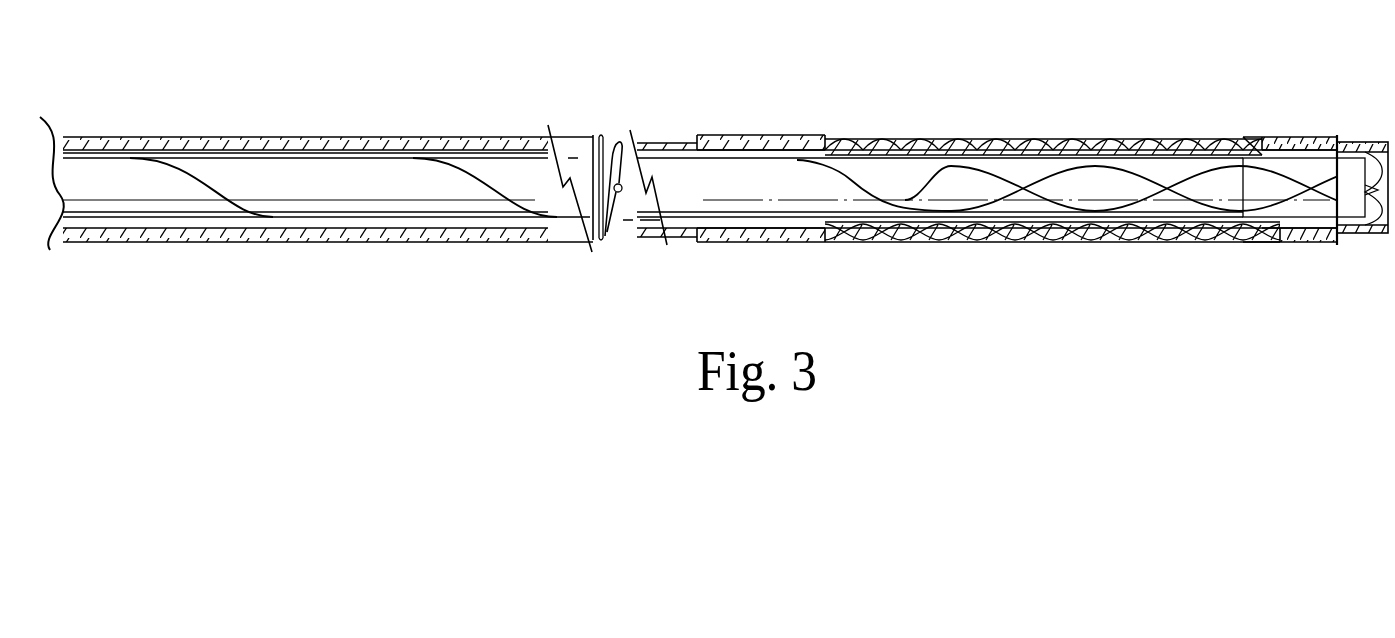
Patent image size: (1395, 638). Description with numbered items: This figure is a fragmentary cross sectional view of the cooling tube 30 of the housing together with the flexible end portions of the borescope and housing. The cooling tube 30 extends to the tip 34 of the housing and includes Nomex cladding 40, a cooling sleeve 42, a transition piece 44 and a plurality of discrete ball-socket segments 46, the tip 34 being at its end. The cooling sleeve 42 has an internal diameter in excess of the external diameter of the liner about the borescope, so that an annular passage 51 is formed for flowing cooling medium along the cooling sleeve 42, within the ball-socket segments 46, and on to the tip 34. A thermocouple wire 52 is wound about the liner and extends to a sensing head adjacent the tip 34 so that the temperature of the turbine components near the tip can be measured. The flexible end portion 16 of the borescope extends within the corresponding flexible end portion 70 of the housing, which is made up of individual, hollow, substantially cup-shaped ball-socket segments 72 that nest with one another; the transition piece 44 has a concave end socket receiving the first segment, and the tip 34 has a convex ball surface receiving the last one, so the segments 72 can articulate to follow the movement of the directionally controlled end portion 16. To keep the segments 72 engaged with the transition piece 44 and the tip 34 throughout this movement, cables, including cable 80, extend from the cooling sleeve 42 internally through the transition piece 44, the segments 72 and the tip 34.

The flexible end portion 16 is at (937, 188).
The cooling tube 30 is at (680, 137).
The tip 34 is at (1378, 142).
The Nomex cladding 40 is at (337, 137).
The cooling sleeve 42 is at (640, 238).
The transition piece 44 is at (845, 137).
The ball-socket segments 46 is at (1073, 137).
The annular passage 51 is at (430, 243).
The thermocouple wire 52 is at (227, 188).
The flexible end portion 70 is at (1197, 137).
The ball-socket segments 72 is at (1005, 137).
The cable 80 is at (662, 137).